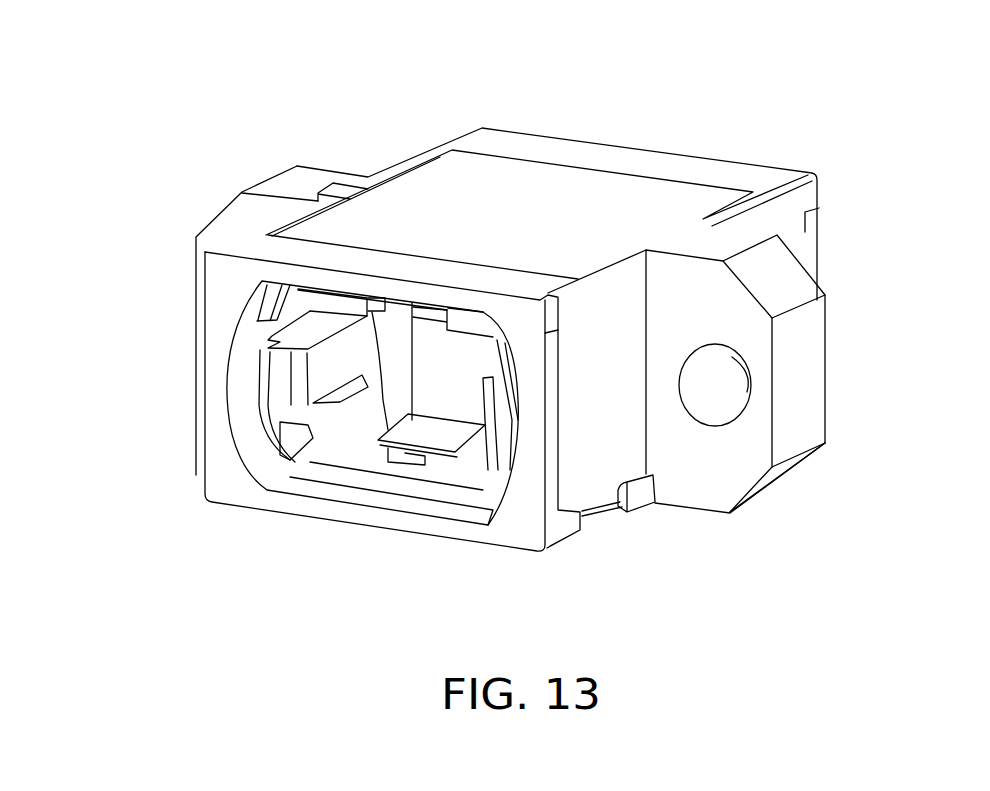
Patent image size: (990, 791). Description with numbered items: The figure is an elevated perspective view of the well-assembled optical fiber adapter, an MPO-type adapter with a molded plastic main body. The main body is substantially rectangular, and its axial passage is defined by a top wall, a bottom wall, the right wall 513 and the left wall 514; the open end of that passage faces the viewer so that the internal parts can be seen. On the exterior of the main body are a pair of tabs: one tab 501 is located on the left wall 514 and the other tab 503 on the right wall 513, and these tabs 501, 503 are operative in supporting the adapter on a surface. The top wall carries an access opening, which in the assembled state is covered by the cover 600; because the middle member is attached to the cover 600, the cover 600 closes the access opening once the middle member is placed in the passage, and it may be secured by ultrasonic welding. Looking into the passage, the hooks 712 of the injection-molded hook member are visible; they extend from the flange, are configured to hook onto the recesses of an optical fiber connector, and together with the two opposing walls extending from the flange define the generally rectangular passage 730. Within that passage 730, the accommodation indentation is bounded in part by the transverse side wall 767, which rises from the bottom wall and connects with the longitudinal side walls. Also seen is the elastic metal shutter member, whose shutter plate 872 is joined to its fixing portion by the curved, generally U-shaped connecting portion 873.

The tab 501 is at (285, 185).
The tab 503 is at (730, 243).
The cover 600 is at (411, 192).
The hook 712 is at (265, 378).
The left wall 514 is at (205, 472).
The passage 730 is at (360, 428).
The transverse side wall 767 is at (378, 455).
The connecting portion 873 is at (392, 462).
The shutter plate 872 is at (450, 382).
The right wall 513 is at (595, 457).